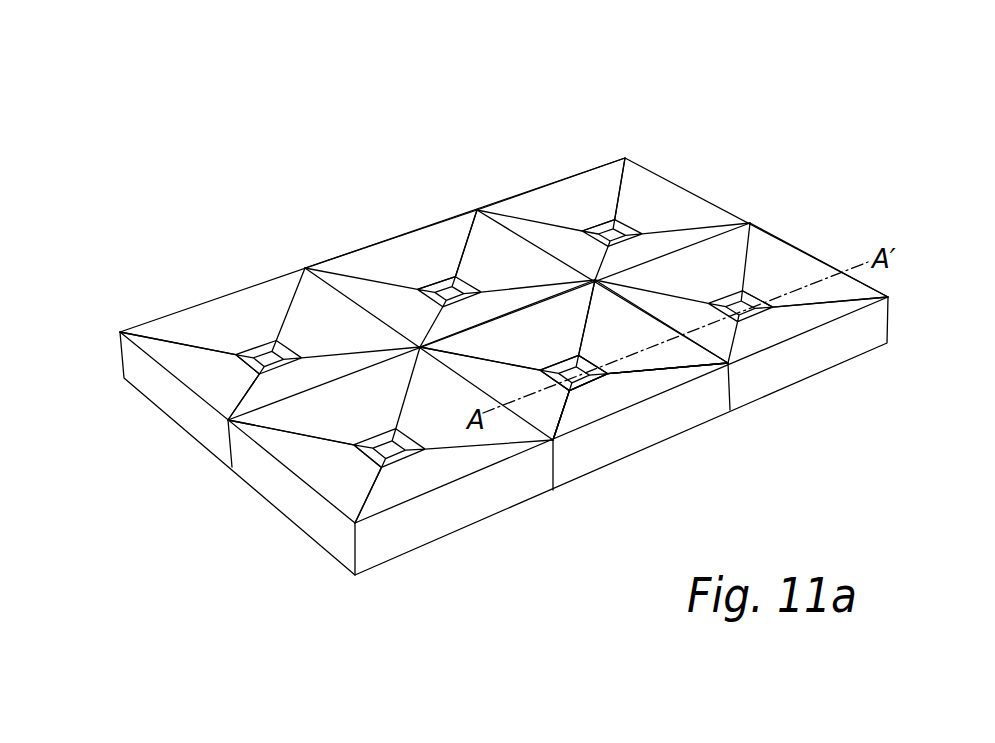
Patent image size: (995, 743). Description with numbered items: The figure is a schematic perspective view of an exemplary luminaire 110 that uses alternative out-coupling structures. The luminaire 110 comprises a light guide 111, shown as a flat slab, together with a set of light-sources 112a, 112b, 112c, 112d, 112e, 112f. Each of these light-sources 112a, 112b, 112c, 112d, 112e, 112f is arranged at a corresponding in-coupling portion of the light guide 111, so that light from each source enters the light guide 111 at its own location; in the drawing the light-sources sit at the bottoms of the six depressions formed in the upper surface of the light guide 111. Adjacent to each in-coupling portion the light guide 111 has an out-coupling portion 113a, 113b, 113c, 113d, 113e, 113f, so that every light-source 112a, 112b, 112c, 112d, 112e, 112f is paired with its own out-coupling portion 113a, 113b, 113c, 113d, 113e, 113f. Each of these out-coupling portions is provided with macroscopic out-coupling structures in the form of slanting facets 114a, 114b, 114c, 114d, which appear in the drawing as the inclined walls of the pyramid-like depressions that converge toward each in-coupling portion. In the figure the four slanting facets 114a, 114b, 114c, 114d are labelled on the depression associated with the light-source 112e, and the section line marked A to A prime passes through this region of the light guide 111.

The luminaire 110 is at (760, 123).
The light guide 111 is at (890, 323).
The light-source 112a is at (262, 352).
The light-source 112b is at (450, 293).
The light-source 112c is at (610, 223).
The light-source 112d is at (400, 467).
The light-source 112e is at (585, 385).
The light-source 112f is at (752, 313).
The out-coupling portion 113a is at (197, 372).
The out-coupling portion 113b is at (452, 227).
The out-coupling portion 113c is at (613, 170).
The out-coupling portion 113d is at (295, 463).
The out-coupling portion 113e is at (607, 405).
The out-coupling portion 113f is at (780, 260).
The slanting facet 114a is at (540, 413).
The slanting facet 114b is at (528, 337).
The slanting facet 114c is at (688, 353).
The slanting facet 114d is at (623, 398).